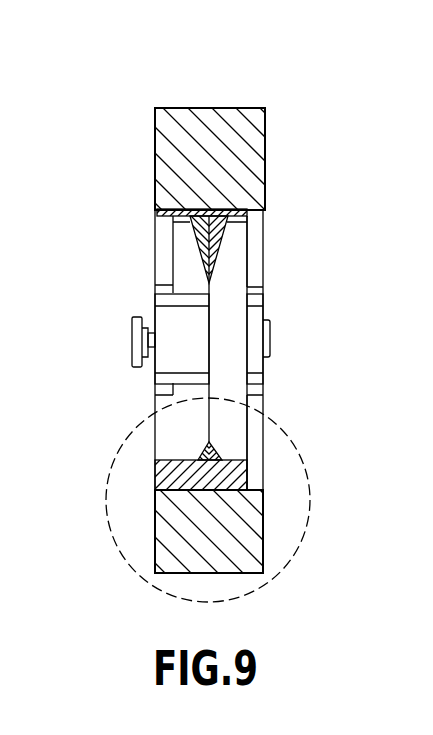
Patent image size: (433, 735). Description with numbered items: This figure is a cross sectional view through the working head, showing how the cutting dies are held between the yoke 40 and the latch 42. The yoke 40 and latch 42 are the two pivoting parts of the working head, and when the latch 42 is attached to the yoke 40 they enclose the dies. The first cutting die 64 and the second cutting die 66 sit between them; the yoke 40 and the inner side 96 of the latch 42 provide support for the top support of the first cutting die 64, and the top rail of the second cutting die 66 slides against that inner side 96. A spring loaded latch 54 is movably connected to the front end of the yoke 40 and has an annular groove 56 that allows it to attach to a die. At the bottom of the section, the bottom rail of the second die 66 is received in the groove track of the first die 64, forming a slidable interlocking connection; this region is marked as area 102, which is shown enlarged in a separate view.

The latch 42 is at (268, 120).
The inner side of the latch 96 is at (160, 213).
The second cutting die 66 is at (195, 232).
The first cutting die 64 is at (223, 222).
The annular groove 56 is at (154, 325).
The spring loaded latch 54 is at (132, 352).
The yoke 40 is at (178, 543).
The area 102 is at (300, 444).